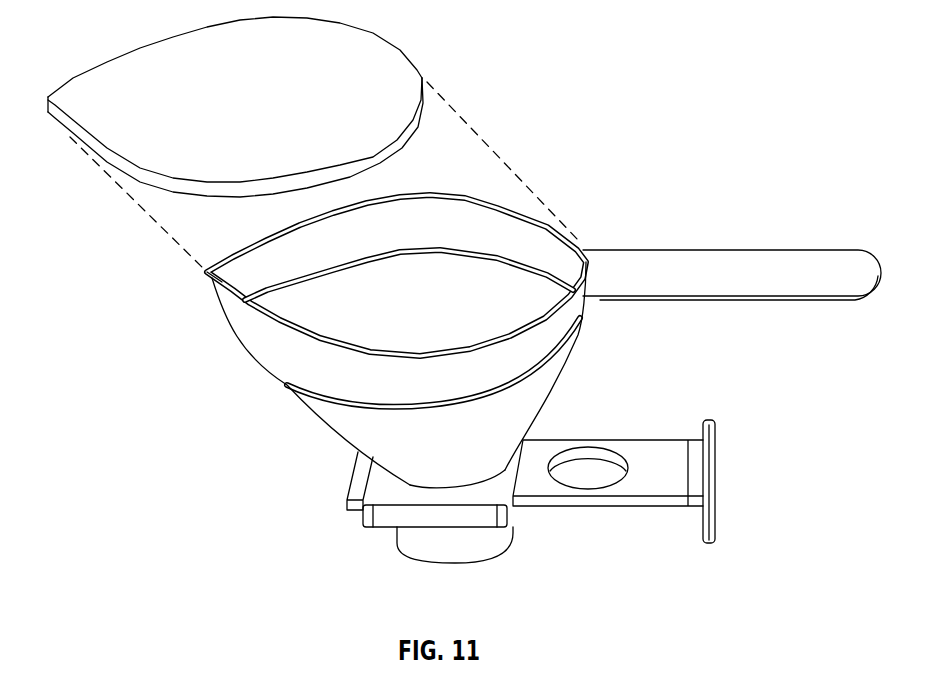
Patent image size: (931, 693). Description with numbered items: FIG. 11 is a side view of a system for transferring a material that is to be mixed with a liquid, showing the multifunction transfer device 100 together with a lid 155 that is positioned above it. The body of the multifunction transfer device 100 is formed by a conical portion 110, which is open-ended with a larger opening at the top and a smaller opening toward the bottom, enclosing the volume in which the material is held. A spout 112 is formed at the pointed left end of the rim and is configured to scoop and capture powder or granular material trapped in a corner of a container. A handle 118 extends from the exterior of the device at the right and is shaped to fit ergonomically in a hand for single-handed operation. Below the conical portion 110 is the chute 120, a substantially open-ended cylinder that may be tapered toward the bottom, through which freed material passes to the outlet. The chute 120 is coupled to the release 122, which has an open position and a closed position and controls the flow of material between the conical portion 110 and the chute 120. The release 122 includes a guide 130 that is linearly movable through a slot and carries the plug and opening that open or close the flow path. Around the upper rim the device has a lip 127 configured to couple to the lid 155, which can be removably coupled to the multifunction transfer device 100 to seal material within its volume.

The multifunction transfer device 100 is at (612, 200).
The conical portion 110 is at (568, 363).
The spout 112 is at (220, 282).
The handle 118 is at (790, 258).
The chute 120 is at (513, 522).
The release 122 is at (358, 515).
The lip 127 is at (310, 335).
The guide 130 is at (684, 414).
The lid 155 is at (430, 62).